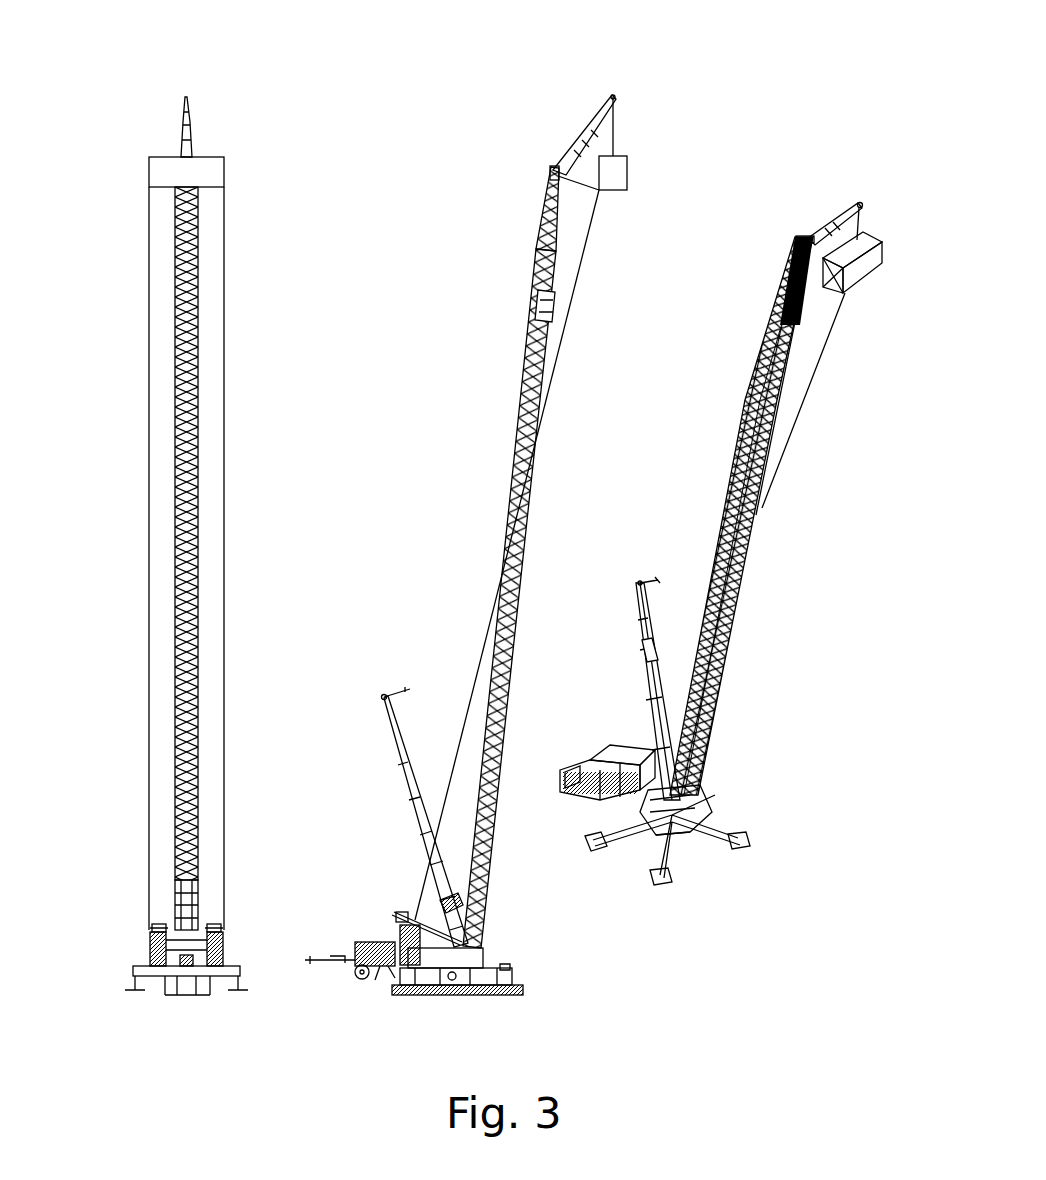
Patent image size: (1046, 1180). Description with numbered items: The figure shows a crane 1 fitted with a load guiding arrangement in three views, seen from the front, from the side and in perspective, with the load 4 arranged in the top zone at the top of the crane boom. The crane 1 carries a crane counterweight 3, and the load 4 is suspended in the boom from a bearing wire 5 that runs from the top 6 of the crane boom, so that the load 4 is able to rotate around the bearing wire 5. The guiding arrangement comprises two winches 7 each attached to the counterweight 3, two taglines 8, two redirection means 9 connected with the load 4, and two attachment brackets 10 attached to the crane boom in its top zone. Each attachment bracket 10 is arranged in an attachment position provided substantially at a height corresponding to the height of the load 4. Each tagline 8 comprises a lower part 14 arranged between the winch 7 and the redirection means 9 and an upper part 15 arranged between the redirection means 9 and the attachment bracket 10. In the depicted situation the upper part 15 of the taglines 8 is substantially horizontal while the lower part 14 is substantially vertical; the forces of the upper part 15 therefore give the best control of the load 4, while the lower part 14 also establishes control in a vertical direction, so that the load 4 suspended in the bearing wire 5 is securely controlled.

The crane 1 is at (530, 1000).
The crane counterweight 3 is at (150, 943).
The load 4 is at (226, 162).
The bearing wire 5 is at (615, 128).
The top of the crane boom 6 is at (617, 95).
The winch 7 is at (150, 928).
The tagline 8 is at (147, 302).
The redirection means 9 is at (147, 177).
The attachment bracket 10 is at (548, 170).
The lower part of the tagline 14 is at (565, 320).
The upper part of the tagline 15 is at (578, 190).